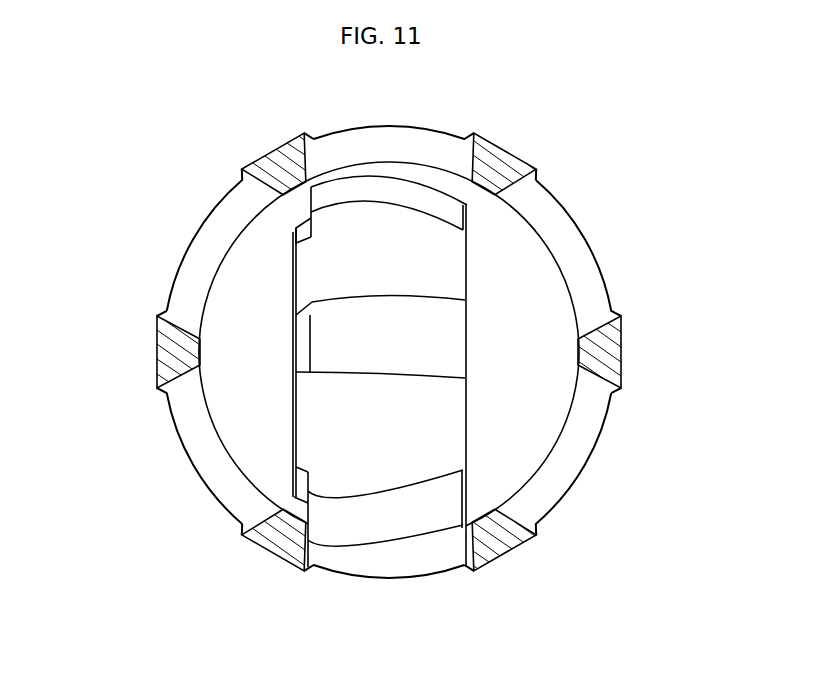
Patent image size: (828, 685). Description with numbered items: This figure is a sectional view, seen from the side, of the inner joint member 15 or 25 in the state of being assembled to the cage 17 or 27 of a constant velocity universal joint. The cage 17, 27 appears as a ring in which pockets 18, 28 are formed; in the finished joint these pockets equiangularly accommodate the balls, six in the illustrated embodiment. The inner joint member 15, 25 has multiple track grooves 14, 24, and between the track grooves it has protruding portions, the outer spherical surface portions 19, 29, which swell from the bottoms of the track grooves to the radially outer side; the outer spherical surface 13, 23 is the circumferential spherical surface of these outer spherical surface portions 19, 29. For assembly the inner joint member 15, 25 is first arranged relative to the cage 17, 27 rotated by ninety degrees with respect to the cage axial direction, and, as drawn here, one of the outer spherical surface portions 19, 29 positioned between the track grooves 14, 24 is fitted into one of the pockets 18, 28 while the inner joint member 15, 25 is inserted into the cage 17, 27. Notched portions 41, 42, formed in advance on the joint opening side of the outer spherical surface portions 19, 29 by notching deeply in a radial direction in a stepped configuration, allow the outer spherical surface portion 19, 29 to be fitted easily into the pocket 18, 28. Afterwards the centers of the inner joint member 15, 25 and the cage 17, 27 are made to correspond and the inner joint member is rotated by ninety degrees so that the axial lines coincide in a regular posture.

The outer spherical surface 13 is at (507, 274).
The outer spherical surface 23 is at (440, 330).
The track groove 14 is at (490, 494).
The track groove 24 is at (440, 443).
The inner joint member 15 is at (489, 377).
The inner joint member 25 is at (468, 257).
The cage 17 is at (317, 352).
The cage 27 is at (157, 341).
The pocket 18 is at (389, 357).
The pocket 28 is at (388, 137).
The outer spherical surface portion 19 is at (502, 407).
The outer spherical surface portion 29 is at (425, 377).
The notched portion 41 is at (188, 418).
The notched portion 42 is at (310, 337).